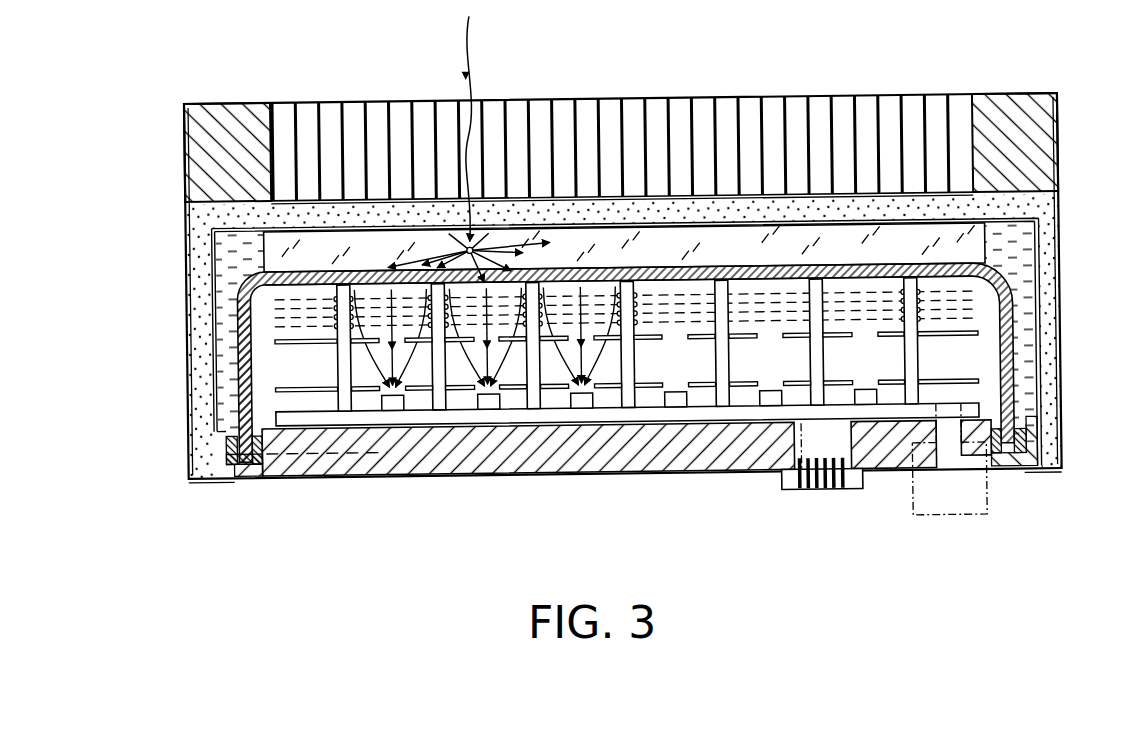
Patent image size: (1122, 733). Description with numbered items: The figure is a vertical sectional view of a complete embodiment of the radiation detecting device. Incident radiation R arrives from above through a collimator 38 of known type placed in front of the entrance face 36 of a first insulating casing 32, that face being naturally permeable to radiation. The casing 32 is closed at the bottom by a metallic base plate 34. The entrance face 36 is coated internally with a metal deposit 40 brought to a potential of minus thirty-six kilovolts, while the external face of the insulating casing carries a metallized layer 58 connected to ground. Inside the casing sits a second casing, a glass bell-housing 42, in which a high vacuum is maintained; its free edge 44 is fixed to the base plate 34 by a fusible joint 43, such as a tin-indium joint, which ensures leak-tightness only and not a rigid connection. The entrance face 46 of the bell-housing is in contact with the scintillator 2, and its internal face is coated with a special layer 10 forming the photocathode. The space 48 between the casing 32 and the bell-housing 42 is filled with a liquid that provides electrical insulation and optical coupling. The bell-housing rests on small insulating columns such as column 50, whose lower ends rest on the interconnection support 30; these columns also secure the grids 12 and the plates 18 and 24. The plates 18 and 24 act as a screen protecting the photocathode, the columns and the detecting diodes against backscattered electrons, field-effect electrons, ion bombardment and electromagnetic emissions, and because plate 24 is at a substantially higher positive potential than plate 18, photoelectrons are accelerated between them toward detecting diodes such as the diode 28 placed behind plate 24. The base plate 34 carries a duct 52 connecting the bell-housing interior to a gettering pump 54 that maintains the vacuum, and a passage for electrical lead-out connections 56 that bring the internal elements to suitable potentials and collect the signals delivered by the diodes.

The scintillator 2 is at (644, 265).
The special layer forming the photocathode 10 is at (767, 294).
The grids 12 is at (268, 321).
The plate 18 is at (312, 344).
The plate 24 is at (458, 401).
The detecting diode 28 is at (578, 400).
The interconnection support 30 is at (648, 413).
The first insulating casing 32 is at (1047, 479).
The metallic base plate 34 is at (358, 462).
The entrance face 36 is at (868, 212).
The collimator 38 is at (786, 104).
The metal deposit 40 is at (570, 235).
The glass bell-housing 42 is at (231, 371).
The fusible joint 43 is at (248, 462).
The free edge 44 is at (222, 455).
The entrance face of the glass bell-housing 46 is at (883, 281).
The space 48 is at (1016, 261).
The column 50 is at (530, 400).
The duct 52 is at (943, 428).
The gettering pump 54 is at (986, 519).
The electrical lead-out connections 56 is at (786, 496).
The layer 58 is at (190, 212).
The incident radiation R is at (467, 64).